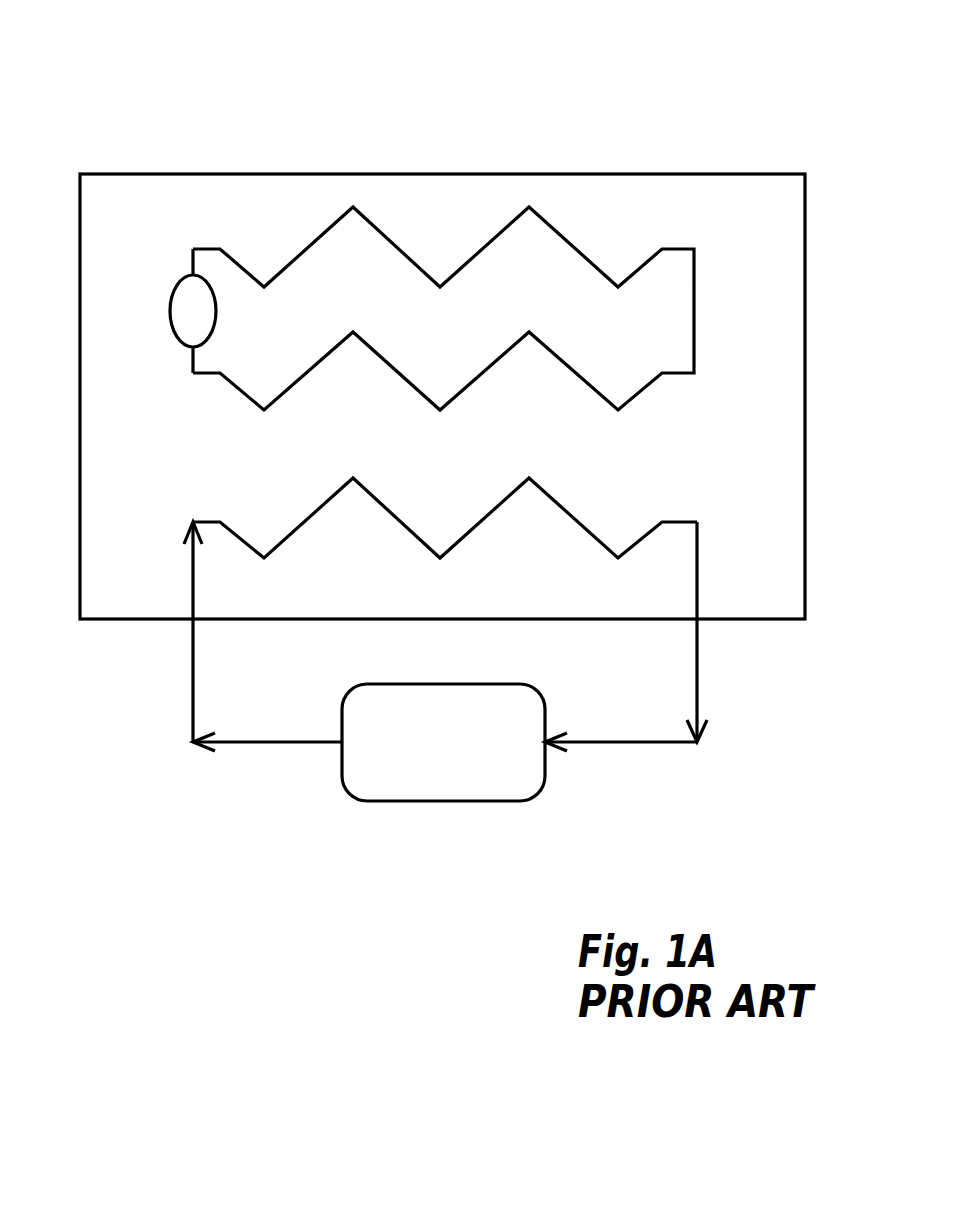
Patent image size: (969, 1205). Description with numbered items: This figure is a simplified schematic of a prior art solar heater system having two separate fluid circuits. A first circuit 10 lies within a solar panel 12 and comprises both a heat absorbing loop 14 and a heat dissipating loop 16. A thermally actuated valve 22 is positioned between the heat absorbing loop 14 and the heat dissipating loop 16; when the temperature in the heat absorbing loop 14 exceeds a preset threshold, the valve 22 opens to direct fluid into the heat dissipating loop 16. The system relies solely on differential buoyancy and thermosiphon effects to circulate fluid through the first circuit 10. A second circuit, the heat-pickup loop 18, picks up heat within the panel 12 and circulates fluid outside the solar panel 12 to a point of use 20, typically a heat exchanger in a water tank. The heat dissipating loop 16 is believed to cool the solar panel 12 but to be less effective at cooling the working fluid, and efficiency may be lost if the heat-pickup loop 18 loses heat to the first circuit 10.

The first circuit 10 is at (232, 133).
The solar panel 12 is at (741, 476).
The heat absorbing loop 14 is at (640, 396).
The heat dissipating loop 16 is at (395, 245).
The heat-pickup loop 18 is at (700, 705).
The point of use 20 is at (446, 756).
The thermally actuated valve 22 is at (170, 312).